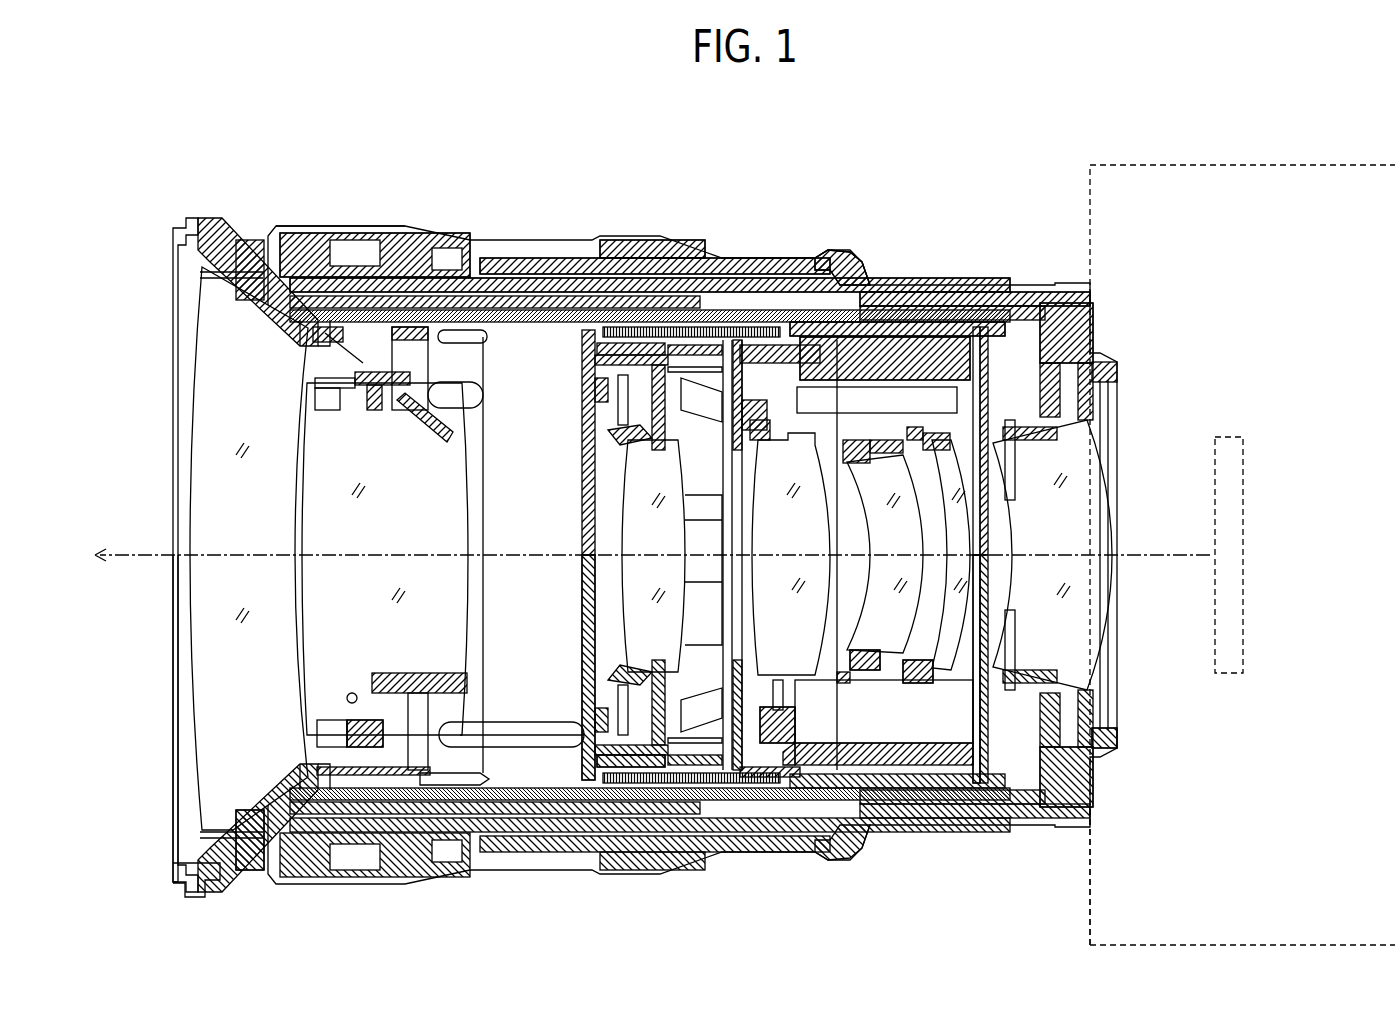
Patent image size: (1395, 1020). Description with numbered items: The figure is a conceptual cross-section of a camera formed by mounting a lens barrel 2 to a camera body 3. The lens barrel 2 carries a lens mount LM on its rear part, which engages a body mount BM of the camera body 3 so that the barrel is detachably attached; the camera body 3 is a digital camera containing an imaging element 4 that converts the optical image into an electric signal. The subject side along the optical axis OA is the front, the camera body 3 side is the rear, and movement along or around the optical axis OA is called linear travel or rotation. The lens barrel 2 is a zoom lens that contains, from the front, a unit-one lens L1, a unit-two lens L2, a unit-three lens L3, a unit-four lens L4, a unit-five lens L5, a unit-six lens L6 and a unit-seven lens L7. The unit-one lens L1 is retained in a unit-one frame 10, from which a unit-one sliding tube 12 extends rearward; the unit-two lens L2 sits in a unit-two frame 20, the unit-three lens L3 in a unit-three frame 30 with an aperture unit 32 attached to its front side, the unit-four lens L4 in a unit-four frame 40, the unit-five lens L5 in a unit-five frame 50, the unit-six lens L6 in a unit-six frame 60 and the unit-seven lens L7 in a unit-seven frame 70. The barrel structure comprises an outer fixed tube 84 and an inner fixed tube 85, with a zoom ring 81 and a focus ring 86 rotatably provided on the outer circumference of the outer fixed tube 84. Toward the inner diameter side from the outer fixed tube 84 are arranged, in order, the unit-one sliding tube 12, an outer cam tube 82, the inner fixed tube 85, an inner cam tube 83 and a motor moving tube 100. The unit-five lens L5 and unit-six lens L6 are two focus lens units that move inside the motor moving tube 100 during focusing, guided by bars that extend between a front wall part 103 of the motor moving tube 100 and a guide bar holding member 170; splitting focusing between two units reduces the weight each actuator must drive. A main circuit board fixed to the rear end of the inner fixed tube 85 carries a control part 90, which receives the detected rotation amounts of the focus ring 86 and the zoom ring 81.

The lens barrel 2 is at (762, 176).
The camera body 3 is at (1260, 165).
The imaging element 4 is at (1240, 437).
The unit-one frame 10 is at (248, 823).
The unit-one sliding tube 12 is at (288, 823).
The unit-two frame 20 is at (408, 695).
The unit-three frame 30 is at (652, 727).
The aperture unit 32 is at (588, 760).
The unit-four frame 40 is at (763, 678).
The unit-five frame 50 is at (857, 683).
The unit-six frame 60 is at (925, 683).
The unit-seven frame 70 is at (1012, 680).
The zoom ring 81 is at (660, 245).
The outer cam tube 82 is at (528, 300).
The inner cam tube 83 is at (906, 325).
The outer fixed tube 84 is at (455, 258).
The inner fixed tube 85 is at (832, 297).
The focus ring 86 is at (357, 234).
The control part 90 is at (1033, 322).
The motor moving tube 100 is at (955, 355).
The front wall part 103 is at (795, 365).
The guide bar holding member 170 is at (977, 763).
The lens mount LM is at (1097, 757).
The body mount BM is at (1095, 765).
The optical axis OA is at (652, 540).
The unit-one lens L1 is at (249, 548).
The unit-two lens L2 is at (385, 559).
The unit-three lens L3 is at (653, 556).
The unit-four lens L4 is at (791, 554).
The unit-five lens L5 is at (885, 554).
The unit-six lens L6 is at (951, 555).
The unit-seven lens L7 is at (1052, 555).